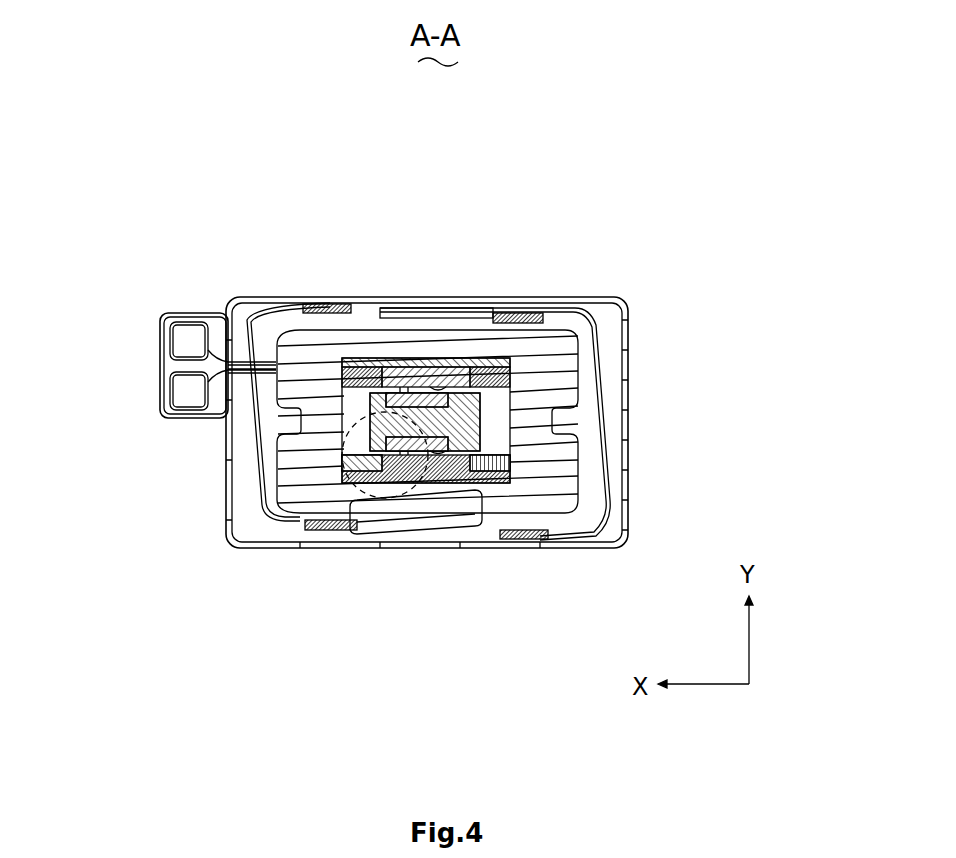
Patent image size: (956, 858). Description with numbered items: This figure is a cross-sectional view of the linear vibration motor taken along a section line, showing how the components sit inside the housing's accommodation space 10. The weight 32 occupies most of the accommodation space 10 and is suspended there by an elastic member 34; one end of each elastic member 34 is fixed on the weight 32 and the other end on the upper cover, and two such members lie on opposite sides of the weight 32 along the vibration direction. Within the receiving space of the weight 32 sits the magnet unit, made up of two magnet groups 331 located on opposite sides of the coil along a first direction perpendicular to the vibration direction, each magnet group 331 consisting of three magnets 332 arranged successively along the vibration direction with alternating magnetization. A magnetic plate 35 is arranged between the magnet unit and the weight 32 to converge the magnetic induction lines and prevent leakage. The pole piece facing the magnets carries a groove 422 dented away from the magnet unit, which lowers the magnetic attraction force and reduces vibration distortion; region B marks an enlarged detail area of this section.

The accommodation space 10 is at (255, 519).
The weight 32 is at (540, 348).
The magnet group 331 is at (437, 328).
The magnet 332 is at (350, 370).
The elastic member 34 is at (262, 470).
The magnetic plate 35 is at (420, 490).
The groove 422 is at (464, 490).
The region B is at (360, 488).